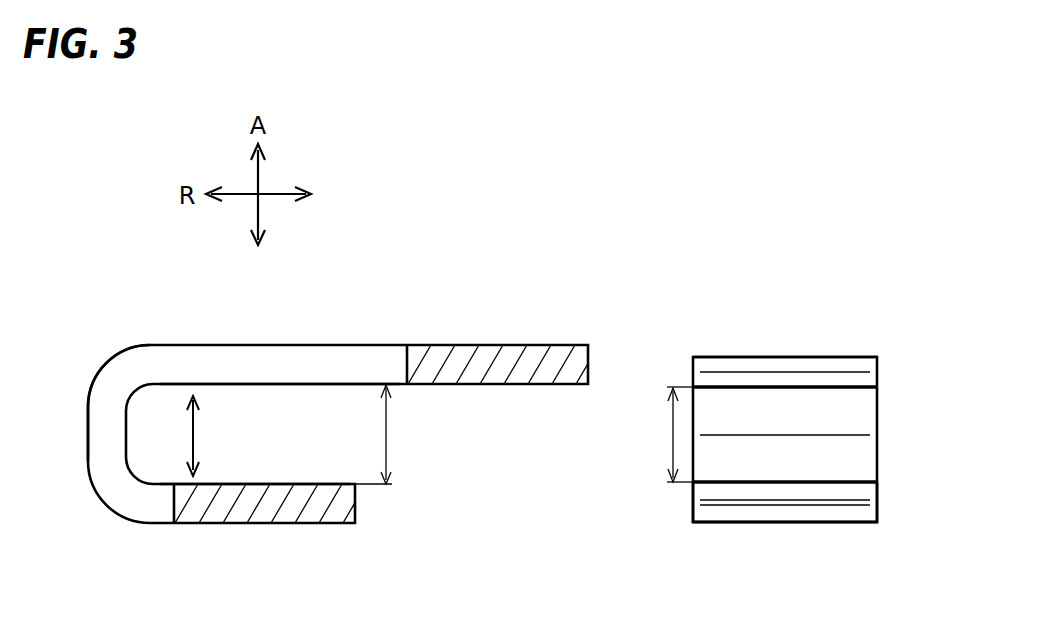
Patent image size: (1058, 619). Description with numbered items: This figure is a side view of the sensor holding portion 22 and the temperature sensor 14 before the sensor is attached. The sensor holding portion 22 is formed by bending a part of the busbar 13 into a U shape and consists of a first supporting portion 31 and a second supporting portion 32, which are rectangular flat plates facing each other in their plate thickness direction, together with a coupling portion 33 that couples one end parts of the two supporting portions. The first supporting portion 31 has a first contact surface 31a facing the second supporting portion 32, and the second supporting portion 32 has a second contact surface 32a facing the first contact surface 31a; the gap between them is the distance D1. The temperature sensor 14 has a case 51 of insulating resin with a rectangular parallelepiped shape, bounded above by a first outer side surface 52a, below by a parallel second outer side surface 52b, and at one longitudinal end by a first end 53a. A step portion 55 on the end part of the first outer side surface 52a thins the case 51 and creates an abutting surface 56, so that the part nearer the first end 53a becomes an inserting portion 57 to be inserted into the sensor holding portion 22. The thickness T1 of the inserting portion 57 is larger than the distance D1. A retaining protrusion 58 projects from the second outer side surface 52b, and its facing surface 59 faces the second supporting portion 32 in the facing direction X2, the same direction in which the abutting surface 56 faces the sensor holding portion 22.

The busbar 13 is at (317, 425).
The temperature sensor 14 is at (770, 435).
The sensor holding portion 22 is at (95, 378).
The first supporting portion 31 is at (328, 350).
The first contact surface 31a is at (235, 386).
The second supporting portion 32 is at (258, 518).
The second contact surface 32a is at (315, 484).
The coupling portion 33 is at (98, 448).
The case 51 is at (852, 527).
The first outer side surface 52a is at (740, 357).
The second outer side surface 52b is at (722, 488).
The first end 53a is at (865, 438).
The step portion 55 is at (855, 384).
The abutting surface 56 is at (806, 367).
The inserting portion 57 is at (855, 477).
The retaining protrusion 58 is at (795, 512).
The facing surface 59 is at (707, 508).
The facing direction X2 is at (190, 433).
The distance D1 is at (398, 433).
The thickness T1 is at (670, 433).